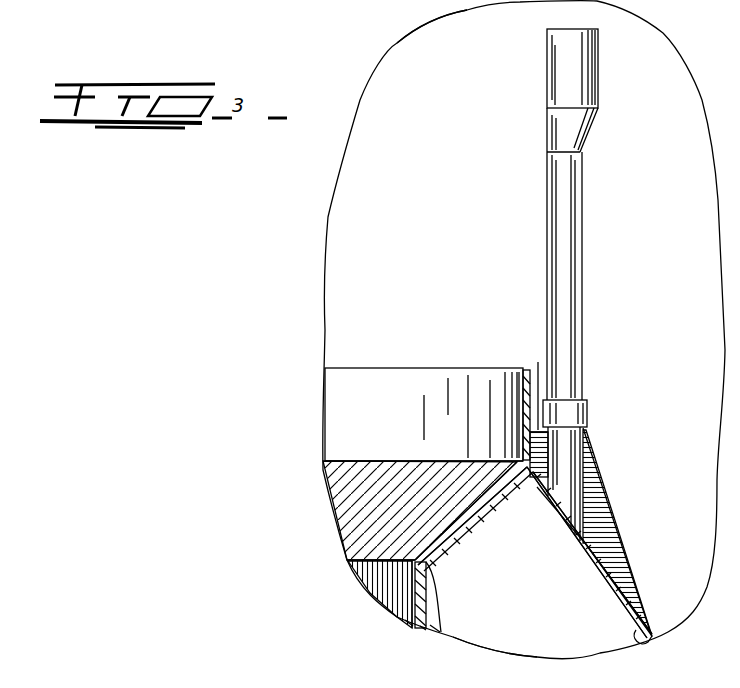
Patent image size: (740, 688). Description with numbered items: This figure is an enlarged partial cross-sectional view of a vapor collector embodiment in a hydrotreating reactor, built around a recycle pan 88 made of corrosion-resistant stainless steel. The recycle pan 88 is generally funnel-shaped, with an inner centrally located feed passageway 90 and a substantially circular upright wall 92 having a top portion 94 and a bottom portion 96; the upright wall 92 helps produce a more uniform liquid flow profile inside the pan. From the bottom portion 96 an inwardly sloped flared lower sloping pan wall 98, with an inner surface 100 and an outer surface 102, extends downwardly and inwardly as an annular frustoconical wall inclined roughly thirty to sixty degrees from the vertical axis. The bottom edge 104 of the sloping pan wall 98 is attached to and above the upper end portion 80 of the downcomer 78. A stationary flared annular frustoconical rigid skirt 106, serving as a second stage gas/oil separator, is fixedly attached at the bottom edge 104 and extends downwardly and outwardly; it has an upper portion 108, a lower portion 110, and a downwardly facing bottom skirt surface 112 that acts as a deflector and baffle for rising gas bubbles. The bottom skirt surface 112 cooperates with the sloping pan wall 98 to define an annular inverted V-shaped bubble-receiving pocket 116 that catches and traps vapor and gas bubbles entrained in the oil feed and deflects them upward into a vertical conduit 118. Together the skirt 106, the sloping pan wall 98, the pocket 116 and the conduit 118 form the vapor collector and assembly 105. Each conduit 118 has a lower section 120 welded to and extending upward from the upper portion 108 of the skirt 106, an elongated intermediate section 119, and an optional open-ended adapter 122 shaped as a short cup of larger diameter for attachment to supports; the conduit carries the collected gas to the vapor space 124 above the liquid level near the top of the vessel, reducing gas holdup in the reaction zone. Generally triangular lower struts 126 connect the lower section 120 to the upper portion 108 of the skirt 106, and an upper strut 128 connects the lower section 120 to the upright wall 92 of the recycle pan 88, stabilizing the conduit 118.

The downcomer 78 is at (414, 623).
The upper end portion 80 is at (428, 632).
The recycle pan 88 is at (405, 368).
The feed passageway 90 is at (367, 566).
The upright wall 92 is at (522, 392).
The top portion 94 is at (525, 370).
The bottom portion 96 is at (521, 462).
The sloping pan wall 98 is at (436, 556).
The inner surface 100 is at (462, 522).
The outer surface 102 is at (450, 537).
The bottom edge 104 is at (436, 630).
The vapor collector and assembly 105 is at (525, 474).
The skirt 106 is at (608, 580).
The upper portion 108 is at (537, 489).
The lower portion 110 is at (640, 643).
The bottom skirt surface 112 is at (592, 561).
The bubble-receiving pocket 116 is at (521, 600).
The vertical conduit 118 is at (582, 243).
The intermediate section 119 is at (547, 188).
The lower section 120 is at (585, 440).
The adapter 122 is at (598, 86).
The vapor space 124 is at (500, 92).
The lower strut 126 is at (620, 493).
The upper strut 128 is at (540, 400).